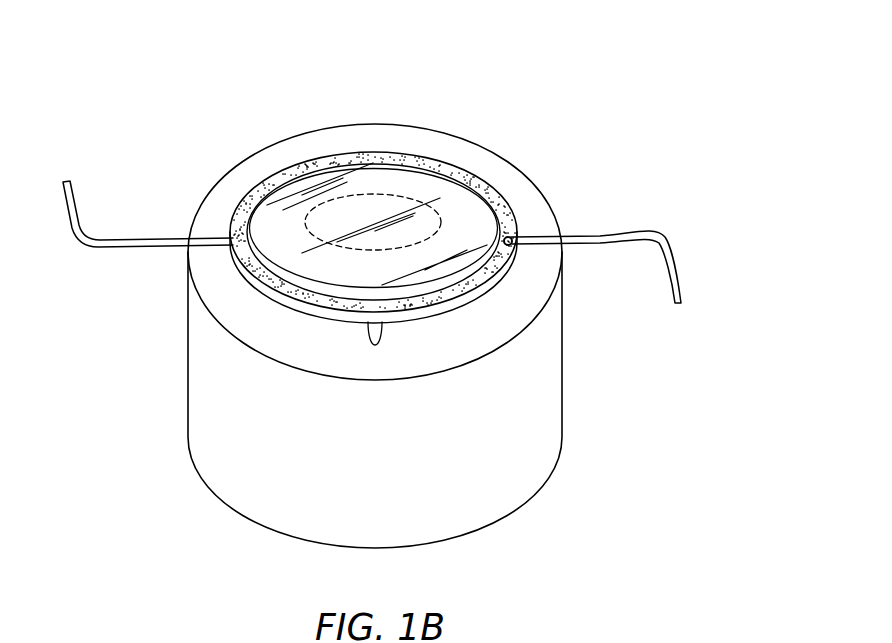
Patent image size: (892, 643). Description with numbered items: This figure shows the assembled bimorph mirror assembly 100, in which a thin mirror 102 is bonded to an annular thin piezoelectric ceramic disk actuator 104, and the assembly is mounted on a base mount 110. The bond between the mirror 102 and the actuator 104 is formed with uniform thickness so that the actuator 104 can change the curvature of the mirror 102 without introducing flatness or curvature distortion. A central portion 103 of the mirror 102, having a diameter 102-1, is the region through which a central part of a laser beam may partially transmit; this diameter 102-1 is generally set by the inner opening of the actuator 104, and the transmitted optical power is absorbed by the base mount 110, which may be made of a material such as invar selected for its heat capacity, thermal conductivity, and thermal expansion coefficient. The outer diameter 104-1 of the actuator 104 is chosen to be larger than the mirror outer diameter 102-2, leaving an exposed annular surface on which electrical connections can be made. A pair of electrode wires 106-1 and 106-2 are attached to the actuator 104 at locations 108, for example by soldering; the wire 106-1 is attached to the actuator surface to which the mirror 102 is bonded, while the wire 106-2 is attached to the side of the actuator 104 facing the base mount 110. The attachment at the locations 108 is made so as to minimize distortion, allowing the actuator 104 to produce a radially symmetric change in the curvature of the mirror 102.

The bimorph mirror assembly 100 is at (618, 97).
The thin mirror 102 is at (287, 190).
The diameter of central portion 102-1 is at (410, 192).
The mirror outer diameter 102-2 is at (470, 272).
The central portion 103 is at (343, 200).
The annular thin piezoelectric ceramic disk actuator 104 is at (250, 192).
The outer diameter of actuator 104-1 is at (250, 279).
The electrode wire 106-1 is at (660, 237).
The electrode wire 106-2 is at (93, 243).
The attachment locations 108 is at (508, 236).
The base mount 110 is at (563, 400).